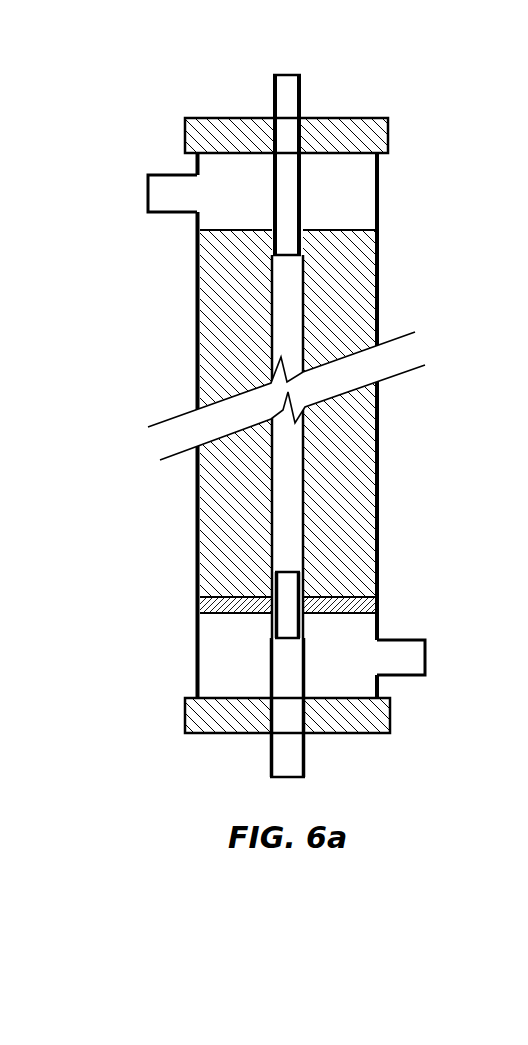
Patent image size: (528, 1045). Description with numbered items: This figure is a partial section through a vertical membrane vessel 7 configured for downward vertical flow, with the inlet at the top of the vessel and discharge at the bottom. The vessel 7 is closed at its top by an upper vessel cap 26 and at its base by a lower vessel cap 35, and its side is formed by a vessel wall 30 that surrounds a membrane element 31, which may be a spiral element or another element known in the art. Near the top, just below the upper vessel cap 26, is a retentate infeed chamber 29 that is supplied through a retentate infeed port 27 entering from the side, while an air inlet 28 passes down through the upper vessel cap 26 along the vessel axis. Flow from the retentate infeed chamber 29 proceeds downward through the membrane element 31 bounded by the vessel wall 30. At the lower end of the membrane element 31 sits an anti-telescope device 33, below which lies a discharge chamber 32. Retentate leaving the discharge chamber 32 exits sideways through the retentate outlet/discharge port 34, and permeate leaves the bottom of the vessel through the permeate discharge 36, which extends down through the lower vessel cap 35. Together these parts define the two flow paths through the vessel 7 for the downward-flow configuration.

The membrane vessel 7 is at (78, 102).
The upper vessel cap 26 is at (185, 135).
The retentate infeed port 27 is at (148, 195).
The air inlet 28 is at (273, 95).
The retentate infeed chamber 29 is at (249, 196).
The vessel wall 30 is at (208, 290).
The membrane element 31 is at (367, 295).
The discharge chamber 32 is at (248, 666).
The anti-telescope device 33 is at (352, 613).
The retentate outlet/discharge port 34 is at (427, 658).
The lower vessel cap 35 is at (185, 712).
The permeate discharge 36 is at (268, 760).